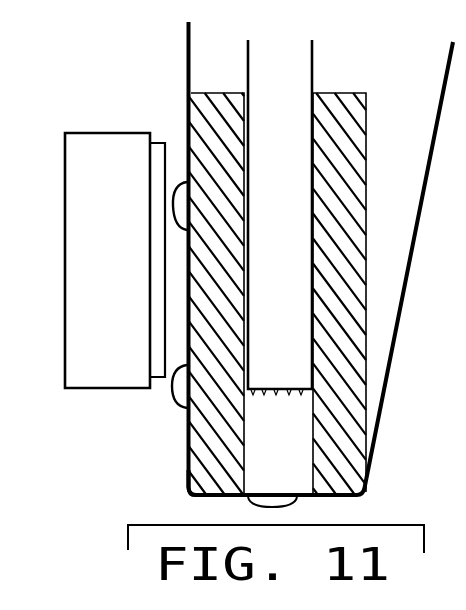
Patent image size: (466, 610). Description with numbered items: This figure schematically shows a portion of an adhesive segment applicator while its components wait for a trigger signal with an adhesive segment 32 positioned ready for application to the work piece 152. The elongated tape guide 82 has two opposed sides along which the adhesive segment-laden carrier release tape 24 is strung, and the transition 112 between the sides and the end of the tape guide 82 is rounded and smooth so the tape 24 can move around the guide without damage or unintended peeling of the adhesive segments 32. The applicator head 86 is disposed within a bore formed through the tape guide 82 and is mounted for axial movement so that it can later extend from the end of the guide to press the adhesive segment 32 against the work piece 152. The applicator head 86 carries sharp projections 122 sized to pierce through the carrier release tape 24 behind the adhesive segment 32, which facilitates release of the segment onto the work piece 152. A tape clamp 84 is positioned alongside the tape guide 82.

The adhesive segment-laden carrier release tape 24 is at (185, 72).
The tape guide 82 is at (366, 172).
The tape clamp 84 is at (65, 258).
The applicator head 86 is at (288, 391).
The transition 112 is at (185, 492).
The sharp projections 122 is at (324, 431).
The adhesive segment 32 is at (292, 507).
The work piece 152 is at (128, 538).